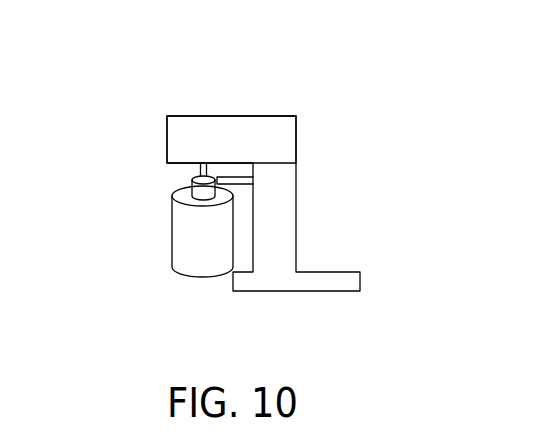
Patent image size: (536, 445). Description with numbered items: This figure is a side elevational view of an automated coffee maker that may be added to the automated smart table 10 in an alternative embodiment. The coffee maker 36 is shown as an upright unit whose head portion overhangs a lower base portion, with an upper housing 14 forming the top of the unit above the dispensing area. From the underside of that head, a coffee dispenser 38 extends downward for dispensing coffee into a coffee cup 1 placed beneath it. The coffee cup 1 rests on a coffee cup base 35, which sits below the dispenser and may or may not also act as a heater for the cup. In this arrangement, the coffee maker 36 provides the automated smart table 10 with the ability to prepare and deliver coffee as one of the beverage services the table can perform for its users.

The automated smart table 10 is at (312, 88).
The mixer head 14 is at (230, 115).
The coffee maker 36 is at (258, 168).
The coffee dispenser 38 is at (199, 169).
The coffee cup 1 is at (160, 184).
The coffee cup base 35 is at (196, 278).